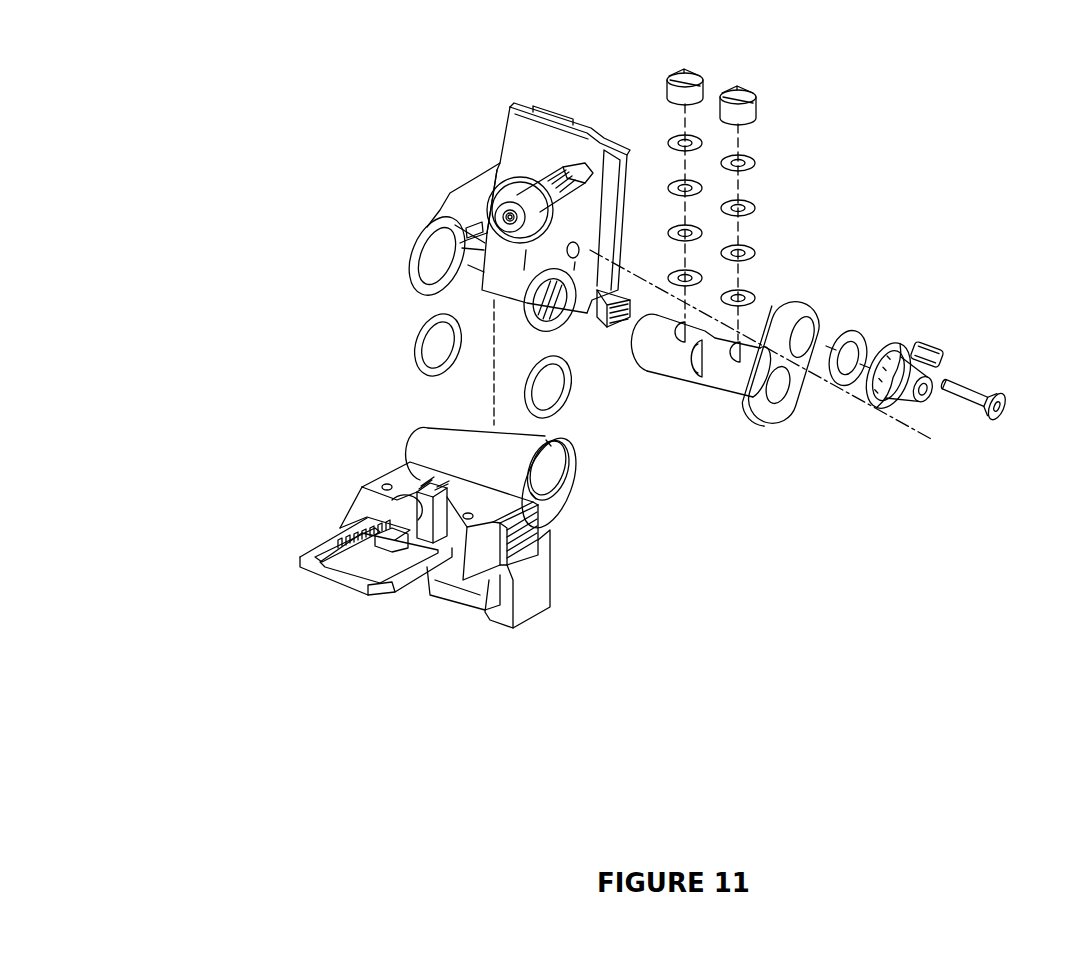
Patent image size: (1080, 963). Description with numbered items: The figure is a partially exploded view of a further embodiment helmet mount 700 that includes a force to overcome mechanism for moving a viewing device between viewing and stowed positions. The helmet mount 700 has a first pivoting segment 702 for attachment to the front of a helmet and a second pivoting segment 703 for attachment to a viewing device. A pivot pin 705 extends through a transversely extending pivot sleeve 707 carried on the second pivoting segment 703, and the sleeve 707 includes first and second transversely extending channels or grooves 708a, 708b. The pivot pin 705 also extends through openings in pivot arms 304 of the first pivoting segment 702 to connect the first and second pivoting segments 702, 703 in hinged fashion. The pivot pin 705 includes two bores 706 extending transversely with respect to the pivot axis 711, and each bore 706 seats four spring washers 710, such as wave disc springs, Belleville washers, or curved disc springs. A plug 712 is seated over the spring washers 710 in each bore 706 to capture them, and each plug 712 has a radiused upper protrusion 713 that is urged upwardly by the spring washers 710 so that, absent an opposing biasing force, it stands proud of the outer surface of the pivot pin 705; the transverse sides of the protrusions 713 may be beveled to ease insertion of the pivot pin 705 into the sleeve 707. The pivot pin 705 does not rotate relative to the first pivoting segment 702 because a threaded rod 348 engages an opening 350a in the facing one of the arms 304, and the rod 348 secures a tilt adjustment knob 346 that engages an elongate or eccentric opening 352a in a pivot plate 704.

The helmet mount 700 is at (180, 122).
The first pivoting segment 702 is at (438, 186).
The pivot arms 304 is at (408, 262).
The opening 350a is at (573, 248).
The second pivoting segment 703 is at (360, 467).
The pivot plate 704 is at (777, 410).
The pivot pin 705 is at (735, 388).
The bores 706 is at (727, 362).
The pivot sleeve 707 is at (443, 430).
The first transversely extending channel or groove 708a is at (548, 444).
The second transversely extending channel or groove 708b is at (535, 496).
The spring washers 710 is at (671, 140).
The pivot axis 711 is at (934, 438).
The plug 712 is at (663, 85).
The protrusion 713 is at (690, 75).
The tilt adjustment knob 346 is at (930, 342).
The threaded rod 348 is at (973, 390).
The elongate or eccentric opening 352a is at (813, 313).